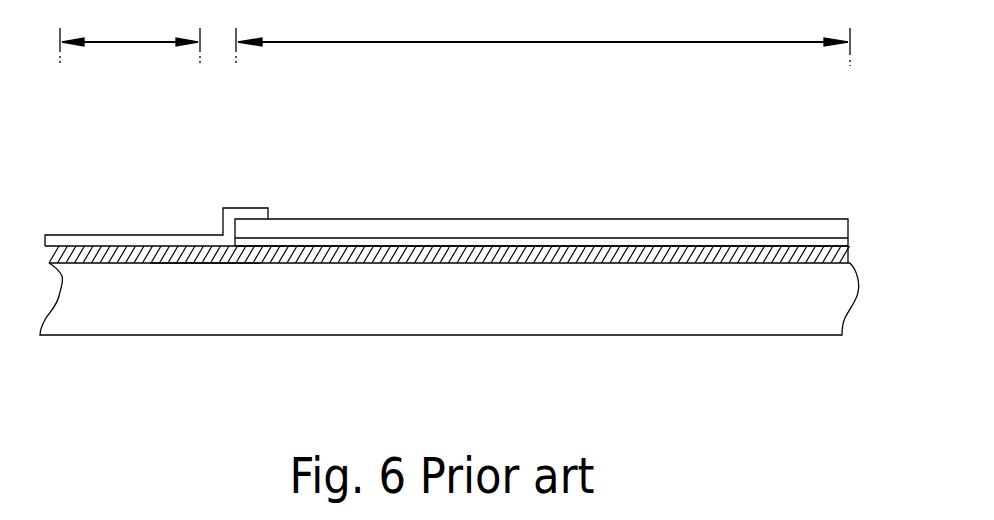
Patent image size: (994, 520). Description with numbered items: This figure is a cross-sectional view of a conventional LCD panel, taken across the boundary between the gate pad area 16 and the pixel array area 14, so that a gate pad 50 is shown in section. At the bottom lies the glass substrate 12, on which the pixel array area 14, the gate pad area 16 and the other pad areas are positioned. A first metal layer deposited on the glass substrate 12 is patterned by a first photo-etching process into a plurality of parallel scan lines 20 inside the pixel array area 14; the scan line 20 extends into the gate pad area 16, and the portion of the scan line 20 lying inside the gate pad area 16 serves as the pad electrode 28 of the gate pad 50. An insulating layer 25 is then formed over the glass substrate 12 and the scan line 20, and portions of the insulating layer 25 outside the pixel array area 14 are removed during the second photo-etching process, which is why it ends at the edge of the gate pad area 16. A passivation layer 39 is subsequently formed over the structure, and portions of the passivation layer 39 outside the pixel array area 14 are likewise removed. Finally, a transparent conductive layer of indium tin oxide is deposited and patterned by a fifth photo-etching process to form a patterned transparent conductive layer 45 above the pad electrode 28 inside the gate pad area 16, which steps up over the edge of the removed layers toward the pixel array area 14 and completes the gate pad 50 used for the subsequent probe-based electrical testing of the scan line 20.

The glass substrate 12 is at (463, 313).
The pixel array area 14 is at (543, 37).
The gate pad area 16 is at (130, 36).
The scan line 20 is at (850, 258).
The insulating layer 25 is at (848, 241).
The pad electrode 28 is at (205, 264).
The passivation layer 39 is at (848, 224).
The patterned transparent conductive layer 45 is at (100, 235).
The gate pad 50 is at (118, 154).